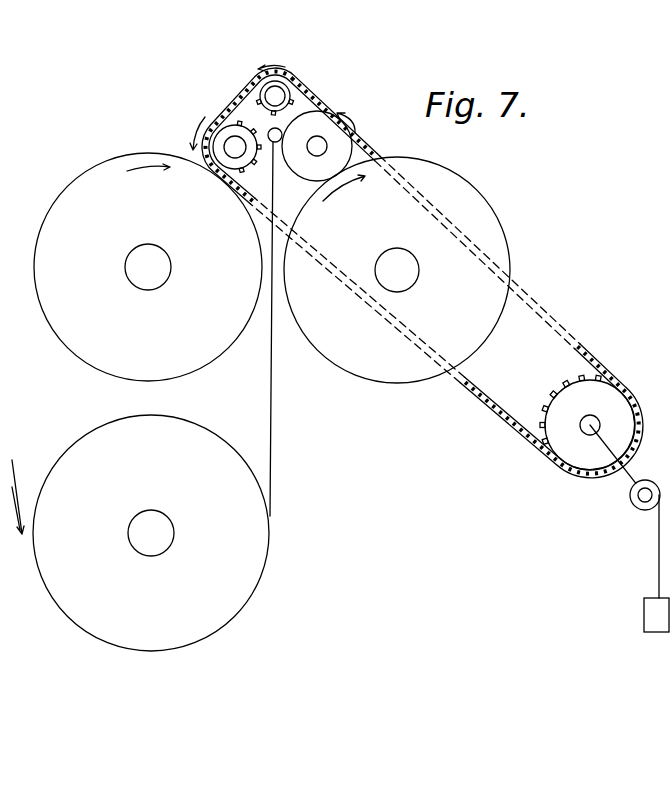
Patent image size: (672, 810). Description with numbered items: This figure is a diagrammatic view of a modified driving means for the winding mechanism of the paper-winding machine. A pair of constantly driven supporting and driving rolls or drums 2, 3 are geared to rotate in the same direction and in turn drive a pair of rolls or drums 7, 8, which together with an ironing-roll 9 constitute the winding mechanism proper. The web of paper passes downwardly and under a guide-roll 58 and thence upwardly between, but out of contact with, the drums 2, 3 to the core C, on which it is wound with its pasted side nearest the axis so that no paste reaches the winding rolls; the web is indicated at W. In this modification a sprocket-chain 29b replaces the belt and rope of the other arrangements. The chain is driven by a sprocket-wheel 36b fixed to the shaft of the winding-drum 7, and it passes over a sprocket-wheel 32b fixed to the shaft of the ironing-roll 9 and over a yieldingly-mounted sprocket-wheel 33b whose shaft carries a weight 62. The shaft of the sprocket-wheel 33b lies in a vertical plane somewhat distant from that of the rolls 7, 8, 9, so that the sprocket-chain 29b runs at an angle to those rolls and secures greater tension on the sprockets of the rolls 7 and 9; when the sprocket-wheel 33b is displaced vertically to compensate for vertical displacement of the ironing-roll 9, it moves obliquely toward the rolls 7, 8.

The drum 2 is at (148, 267).
The drum 3 is at (397, 270).
The winding-drum 7 is at (225, 139).
The roll 8 is at (317, 146).
The ironing-roll 9 is at (280, 89).
The sprocket-chain 29b is at (584, 482).
The sprocket-wheel 32b is at (334, 108).
The yieldingly-mounted sprocket-wheel 33b is at (600, 442).
The sprocket-wheel 36b is at (265, 142).
The guide-roll 58 is at (140, 533).
The weight 62 is at (656, 563).
The web W is at (272, 432).
The core C is at (282, 137).